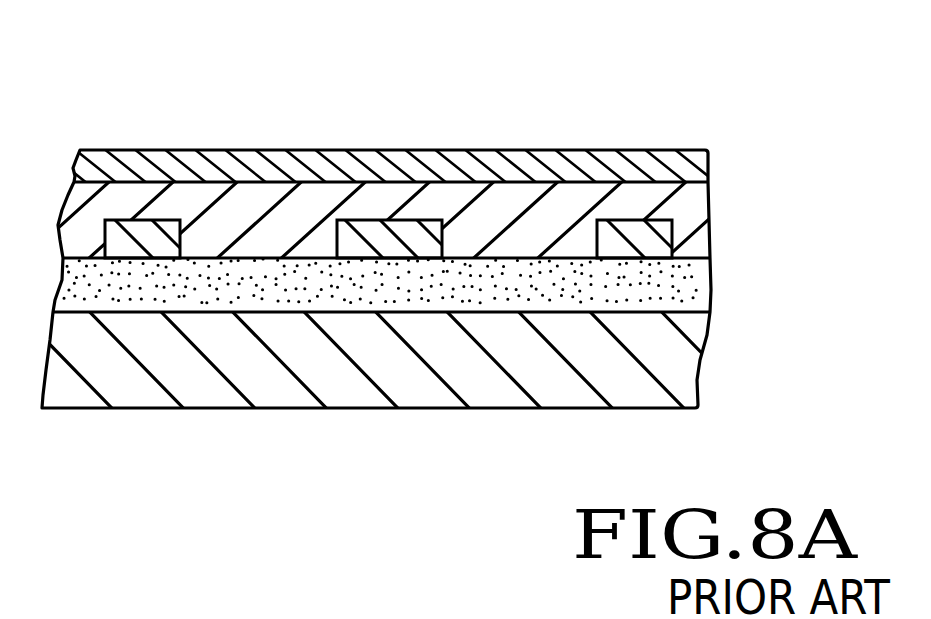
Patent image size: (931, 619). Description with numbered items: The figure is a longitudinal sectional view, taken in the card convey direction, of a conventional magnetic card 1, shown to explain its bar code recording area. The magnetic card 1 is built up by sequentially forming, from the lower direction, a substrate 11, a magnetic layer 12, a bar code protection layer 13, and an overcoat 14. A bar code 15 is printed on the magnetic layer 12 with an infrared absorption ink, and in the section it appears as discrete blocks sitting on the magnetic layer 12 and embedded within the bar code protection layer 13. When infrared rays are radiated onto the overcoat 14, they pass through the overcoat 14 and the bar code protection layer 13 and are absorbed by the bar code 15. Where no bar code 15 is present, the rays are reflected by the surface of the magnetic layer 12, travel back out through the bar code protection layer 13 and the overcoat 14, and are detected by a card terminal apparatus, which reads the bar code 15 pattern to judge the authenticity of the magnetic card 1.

The magnetic card 1 is at (423, 209).
The substrate 11 is at (673, 362).
The magnetic layer 12 is at (678, 278).
The bar code protection layer 13 is at (682, 212).
The overcoat 14 is at (688, 163).
The bar code 15 is at (136, 233).